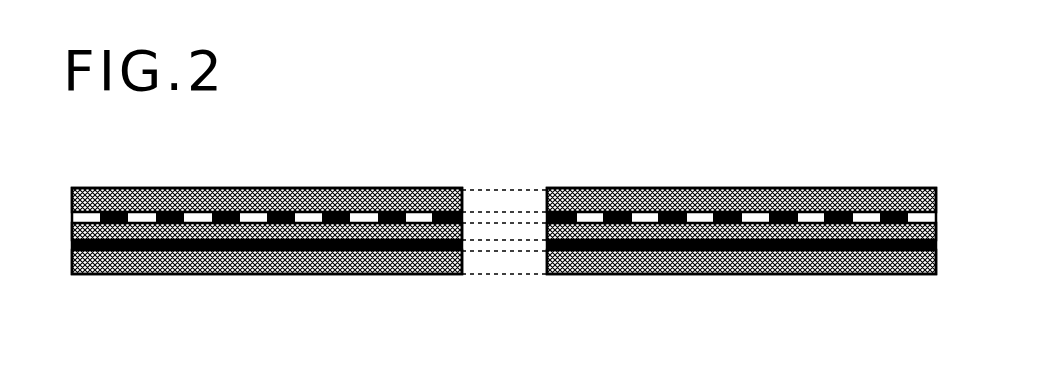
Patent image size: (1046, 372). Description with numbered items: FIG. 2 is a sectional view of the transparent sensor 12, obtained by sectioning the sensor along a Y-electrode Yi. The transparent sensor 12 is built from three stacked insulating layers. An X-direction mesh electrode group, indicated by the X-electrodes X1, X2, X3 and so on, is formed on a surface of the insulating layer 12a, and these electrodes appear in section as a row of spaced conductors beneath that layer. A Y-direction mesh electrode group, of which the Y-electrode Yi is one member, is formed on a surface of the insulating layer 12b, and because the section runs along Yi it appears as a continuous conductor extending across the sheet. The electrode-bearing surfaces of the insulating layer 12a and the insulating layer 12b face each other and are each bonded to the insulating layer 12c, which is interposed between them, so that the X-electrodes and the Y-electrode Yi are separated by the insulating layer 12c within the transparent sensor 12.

The transparent sensor 12 is at (692, 172).
The insulating layer 12a is at (322, 192).
The insulating layer 12b is at (290, 262).
The insulating layer 12c is at (418, 232).
The X-electrode X1 is at (113, 212).
The X-electrode X2 is at (173, 212).
The X-electrode X3 is at (232, 212).
The Y-electrode Yi is at (722, 251).